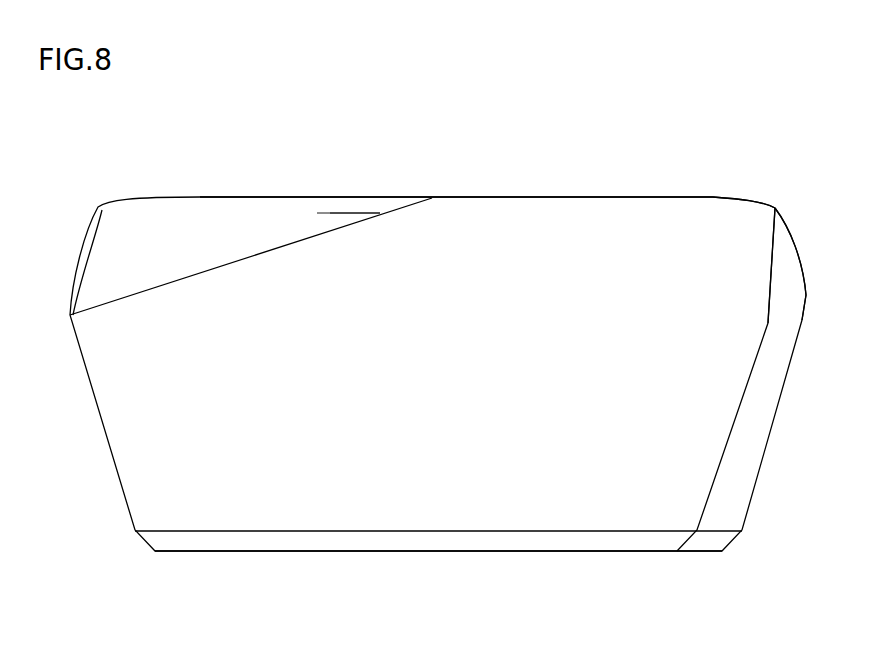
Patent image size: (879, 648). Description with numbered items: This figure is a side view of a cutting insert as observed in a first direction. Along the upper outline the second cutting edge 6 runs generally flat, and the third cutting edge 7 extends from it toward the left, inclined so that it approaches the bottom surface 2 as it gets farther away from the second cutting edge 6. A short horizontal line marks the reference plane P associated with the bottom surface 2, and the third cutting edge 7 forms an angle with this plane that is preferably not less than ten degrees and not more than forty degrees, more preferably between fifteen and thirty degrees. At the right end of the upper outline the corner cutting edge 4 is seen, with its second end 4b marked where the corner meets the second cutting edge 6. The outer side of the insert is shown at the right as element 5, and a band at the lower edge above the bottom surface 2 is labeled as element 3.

The bottom surface 2 is at (458, 551).
The lower portion / bottom band 3 is at (370, 520).
The corner cutting edge 4 is at (748, 199).
The second end 4b is at (718, 197).
The outer side surface 5 is at (797, 257).
The second cutting edge 6 is at (587, 197).
The third cutting edge 7 is at (233, 263).
The reference plane P is at (330, 213).